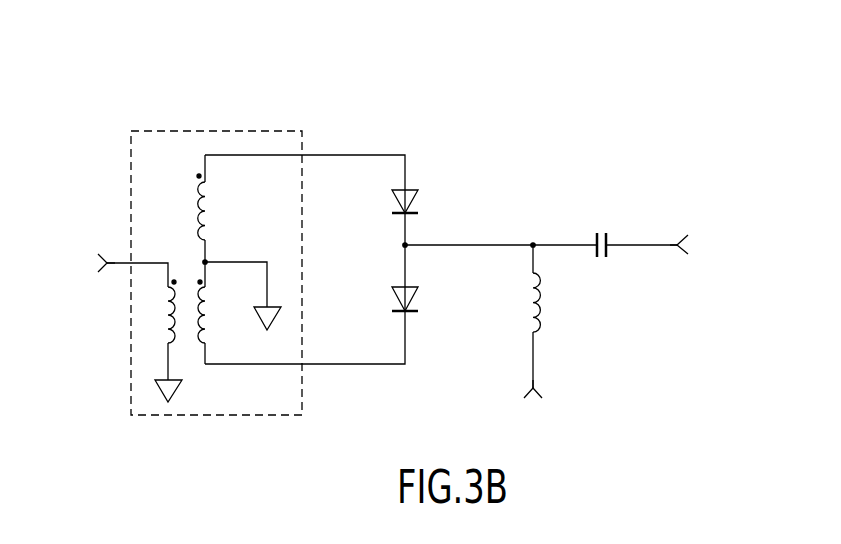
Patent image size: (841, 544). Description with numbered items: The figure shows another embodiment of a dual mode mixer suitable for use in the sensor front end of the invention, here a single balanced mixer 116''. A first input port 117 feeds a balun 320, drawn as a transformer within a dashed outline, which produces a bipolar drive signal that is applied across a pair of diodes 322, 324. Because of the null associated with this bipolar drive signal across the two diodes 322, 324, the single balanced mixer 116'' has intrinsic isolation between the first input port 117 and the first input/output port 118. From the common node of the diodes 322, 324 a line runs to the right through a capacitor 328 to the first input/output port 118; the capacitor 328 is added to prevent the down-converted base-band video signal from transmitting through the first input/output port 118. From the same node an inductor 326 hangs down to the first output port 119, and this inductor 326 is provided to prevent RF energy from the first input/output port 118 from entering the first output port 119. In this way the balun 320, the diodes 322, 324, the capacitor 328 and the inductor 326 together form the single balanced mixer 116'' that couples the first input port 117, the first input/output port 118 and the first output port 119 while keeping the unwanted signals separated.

The single balanced mixer 116'' is at (445, 202).
The balun 320 is at (183, 138).
The first input port 117 is at (103, 259).
The diode 322 is at (415, 203).
The diode 324 is at (413, 297).
The capacitor 328 is at (594, 240).
The first input/output port 118 is at (688, 237).
The inductor 326 is at (540, 312).
The first output port 119 is at (540, 392).